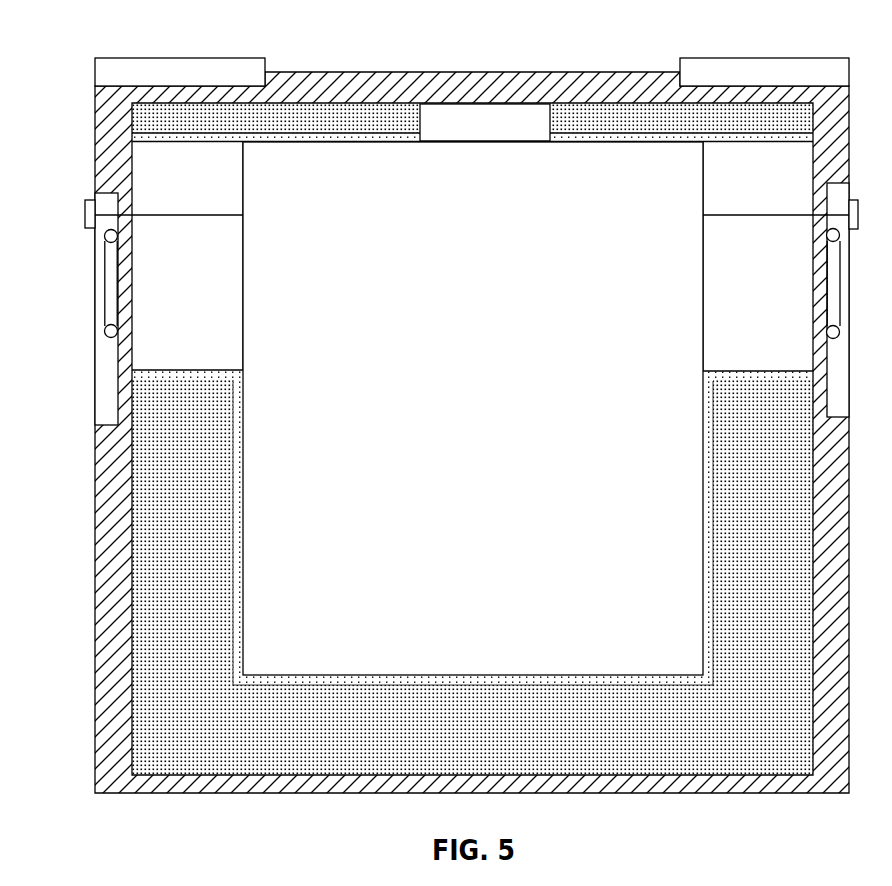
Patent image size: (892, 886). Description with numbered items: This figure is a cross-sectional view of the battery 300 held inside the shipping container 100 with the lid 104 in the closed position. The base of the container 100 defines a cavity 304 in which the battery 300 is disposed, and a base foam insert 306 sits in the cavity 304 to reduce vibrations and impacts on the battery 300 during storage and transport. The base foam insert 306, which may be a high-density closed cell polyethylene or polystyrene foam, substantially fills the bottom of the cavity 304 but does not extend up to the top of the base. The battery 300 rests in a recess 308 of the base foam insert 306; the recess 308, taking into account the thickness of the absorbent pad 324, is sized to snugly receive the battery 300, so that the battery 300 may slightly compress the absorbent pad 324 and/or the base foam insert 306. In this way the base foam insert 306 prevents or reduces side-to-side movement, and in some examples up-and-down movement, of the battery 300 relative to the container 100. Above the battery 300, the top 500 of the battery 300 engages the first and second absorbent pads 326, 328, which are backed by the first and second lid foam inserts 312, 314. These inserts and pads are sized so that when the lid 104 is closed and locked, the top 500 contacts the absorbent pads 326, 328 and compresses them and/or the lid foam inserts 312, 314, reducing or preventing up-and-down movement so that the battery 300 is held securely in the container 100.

The container 100 is at (437, 401).
The lid 104 is at (125, 176).
The battery 300 is at (490, 433).
The cavity 304 is at (140, 272).
The base foam insert 306 is at (160, 545).
The recess 308 is at (240, 362).
The first lid foam insert 312 is at (730, 112).
The second lid foam insert 314 is at (308, 120).
The absorbent pad 324 is at (152, 373).
The first absorbent pad 326 is at (657, 135).
The second absorbent pad 328 is at (380, 140).
The top of the battery 500 is at (592, 142).